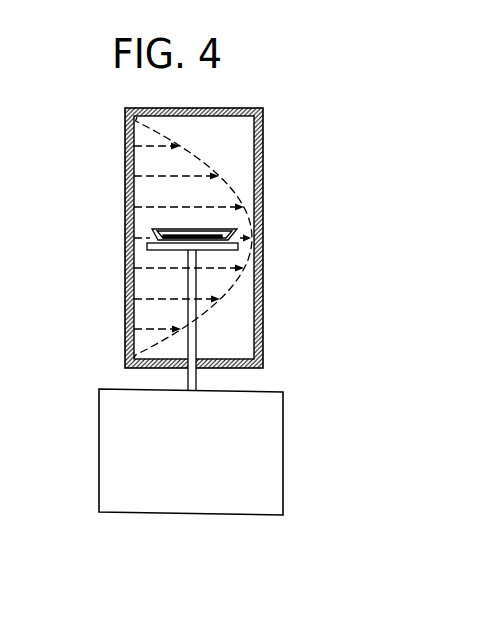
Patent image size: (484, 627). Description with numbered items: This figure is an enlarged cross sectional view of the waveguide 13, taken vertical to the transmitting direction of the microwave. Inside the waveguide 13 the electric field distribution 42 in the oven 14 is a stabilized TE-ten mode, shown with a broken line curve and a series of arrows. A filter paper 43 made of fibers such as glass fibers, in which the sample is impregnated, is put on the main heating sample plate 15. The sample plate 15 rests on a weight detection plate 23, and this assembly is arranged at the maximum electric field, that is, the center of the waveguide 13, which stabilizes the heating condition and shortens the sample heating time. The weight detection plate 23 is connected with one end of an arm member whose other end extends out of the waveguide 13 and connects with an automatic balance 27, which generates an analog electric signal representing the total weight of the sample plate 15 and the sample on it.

The waveguide 13 is at (263, 131).
The oven 14 is at (233, 172).
The electric field distribution 42 is at (150, 176).
The filter paper 43 is at (152, 229).
The main heating sample plate 15 is at (163, 236).
The weight detection plate 23 is at (238, 246).
The automatic balance 27 is at (271, 467).